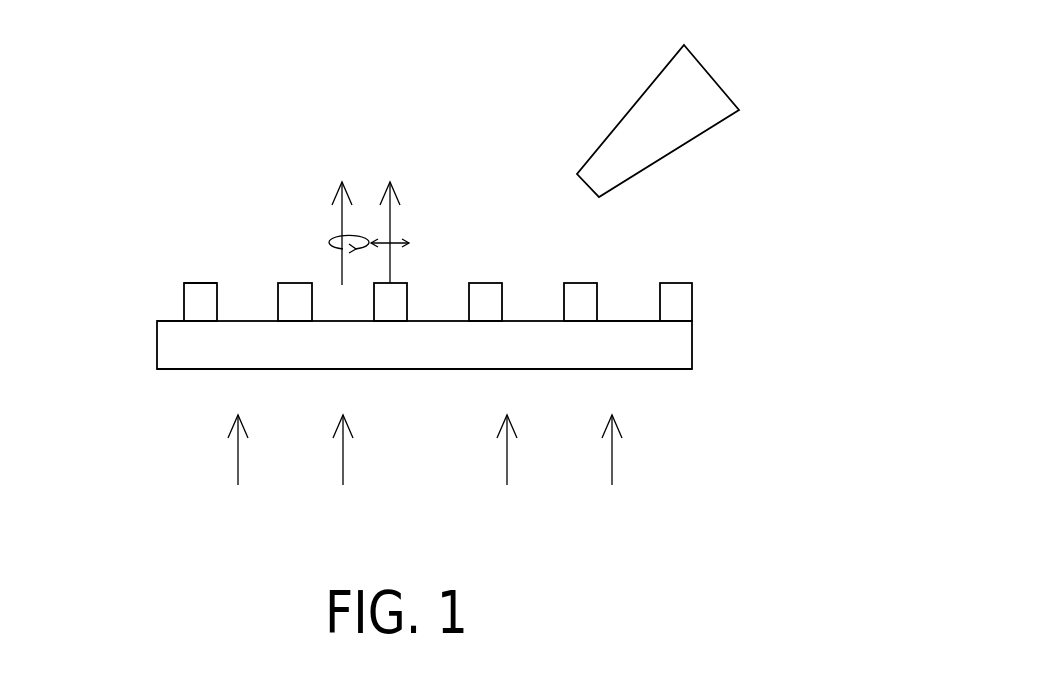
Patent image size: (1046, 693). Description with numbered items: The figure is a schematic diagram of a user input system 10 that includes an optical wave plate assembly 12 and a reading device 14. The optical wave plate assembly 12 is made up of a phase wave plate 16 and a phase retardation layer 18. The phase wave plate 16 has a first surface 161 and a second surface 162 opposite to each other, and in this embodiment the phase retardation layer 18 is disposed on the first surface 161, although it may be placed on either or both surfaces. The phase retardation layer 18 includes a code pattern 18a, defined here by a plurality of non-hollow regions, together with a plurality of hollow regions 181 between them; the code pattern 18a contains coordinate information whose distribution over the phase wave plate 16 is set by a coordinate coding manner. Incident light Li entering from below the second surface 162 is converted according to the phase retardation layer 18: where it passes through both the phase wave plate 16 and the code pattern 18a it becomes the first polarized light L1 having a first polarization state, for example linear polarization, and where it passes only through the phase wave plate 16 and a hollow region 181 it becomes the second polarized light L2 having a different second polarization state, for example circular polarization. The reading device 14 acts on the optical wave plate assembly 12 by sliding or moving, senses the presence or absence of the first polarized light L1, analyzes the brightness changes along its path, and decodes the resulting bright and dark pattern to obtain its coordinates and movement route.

The user input system 10 is at (106, 172).
The optical wave plate assembly 12 is at (802, 273).
The reading device 14 is at (708, 158).
The phase wave plate 16 is at (678, 347).
The first surface 161 is at (173, 320).
The second surface 162 is at (160, 370).
The phase retardation layer 18 is at (700, 308).
The code pattern 18a is at (209, 282).
The hollow regions 181 is at (632, 303).
The first polarized light L1 is at (390, 214).
The second polarized light L2 is at (348, 215).
The incident light Li is at (343, 462).